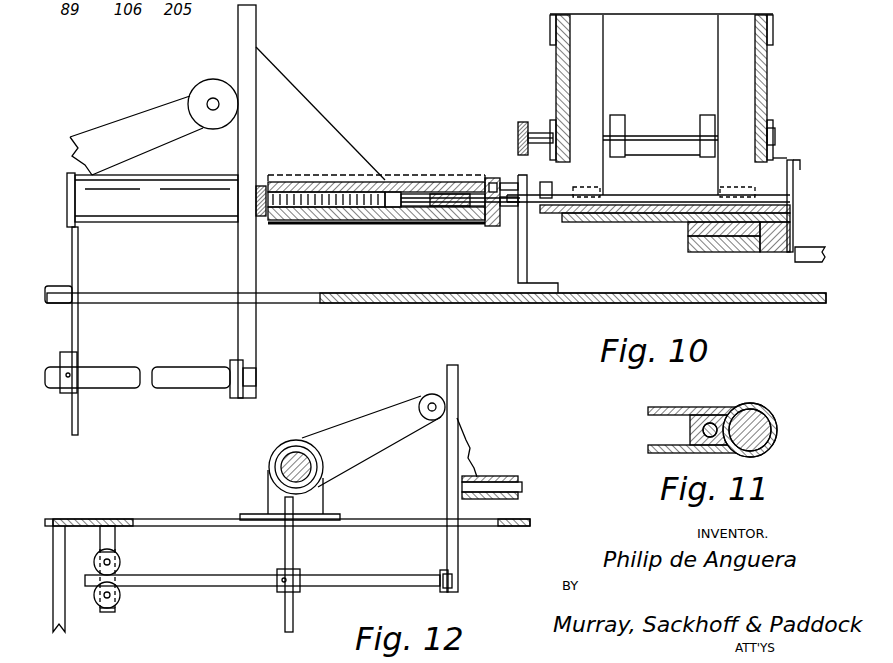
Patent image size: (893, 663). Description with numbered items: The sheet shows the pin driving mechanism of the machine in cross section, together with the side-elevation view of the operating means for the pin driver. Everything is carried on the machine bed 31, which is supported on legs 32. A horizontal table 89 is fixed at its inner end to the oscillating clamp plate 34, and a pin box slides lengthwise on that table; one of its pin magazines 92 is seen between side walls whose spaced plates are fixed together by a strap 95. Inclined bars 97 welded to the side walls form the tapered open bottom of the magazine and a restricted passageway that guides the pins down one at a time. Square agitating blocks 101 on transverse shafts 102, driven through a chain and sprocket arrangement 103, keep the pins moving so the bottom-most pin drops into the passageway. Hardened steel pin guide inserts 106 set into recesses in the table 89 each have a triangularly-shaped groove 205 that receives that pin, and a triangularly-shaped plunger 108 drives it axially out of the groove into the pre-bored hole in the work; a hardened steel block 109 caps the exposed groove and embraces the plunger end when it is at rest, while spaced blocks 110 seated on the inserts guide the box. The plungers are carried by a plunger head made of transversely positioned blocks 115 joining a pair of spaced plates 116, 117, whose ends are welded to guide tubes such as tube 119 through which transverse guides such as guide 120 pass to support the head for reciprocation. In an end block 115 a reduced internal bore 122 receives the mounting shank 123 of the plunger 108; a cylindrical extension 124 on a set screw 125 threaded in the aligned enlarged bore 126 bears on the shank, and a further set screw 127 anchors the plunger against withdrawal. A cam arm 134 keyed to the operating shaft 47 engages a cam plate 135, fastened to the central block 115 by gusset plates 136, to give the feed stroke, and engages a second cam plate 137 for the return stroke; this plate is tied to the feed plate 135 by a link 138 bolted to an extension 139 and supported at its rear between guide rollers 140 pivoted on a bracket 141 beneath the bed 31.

In FIG. 10, the machine bed 31 is at (786, 305).
In FIG. 12, the machine bed 31 is at (90, 519).
In FIG. 12, the legs 32 is at (63, 618).
In FIG. 10, the clamp plate 34 is at (794, 178).
In FIG. 12, the operating shaft 47 is at (295, 455).
In FIG. 10, the horizontal table 89 is at (646, 222).
In FIG. 10, the pin magazine 92 is at (556, 57).
In FIG. 10, the strap 95 is at (551, 32).
In FIG. 10, the inclined bar 97 is at (598, 40).
In FIG. 10, the agitating block 101 is at (619, 118).
In FIG. 10, the transverse shaft 102 is at (680, 135).
In FIG. 10, the chain and sprocket arrangement 103 is at (526, 111).
In FIG. 10, the pin guide insert 106 is at (790, 208).
In FIG. 10, the plunger 108 is at (637, 197).
In FIG. 10, the hardened steel block 109 is at (541, 184).
In FIG. 10, the guide block 110 is at (731, 186).
In FIG. 10, the block 115 is at (433, 182).
In FIG. 11, the block 115 is at (724, 410).
In FIG. 12, the block 115 is at (523, 488).
In FIG. 10, the plate 116 is at (293, 180).
In FIG. 11, the plate 116 is at (692, 407).
In FIG. 12, the plate 116 is at (504, 476).
In FIG. 10, the plate 117 is at (326, 222).
In FIG. 11, the plate 117 is at (655, 447).
In FIG. 12, the plate 117 is at (522, 497).
In FIG. 11, the guide tube 119 is at (775, 424).
In FIG. 10, the transverse guide 120 is at (152, 207).
In FIG. 10, the reduced internal bore 122 is at (418, 207).
In FIG. 10, the mounting shank 123 is at (492, 210).
In FIG. 10, the cylindrical extension 124 is at (402, 195).
In FIG. 10, the set screw 125 is at (358, 212).
In FIG. 10, the enlarged bore 126 is at (390, 190).
In FIG. 10, the set screw 127 is at (480, 181).
In FIG. 10, the cam arm 134 is at (132, 123).
In FIG. 12, the cam arm 134 is at (378, 423).
In FIG. 10, the cam plate 135 is at (252, 32).
In FIG. 12, the cam plate 135 is at (458, 386).
In FIG. 10, the gusset plate 136 is at (292, 86).
In FIG. 12, the gusset plate 136 is at (468, 441).
In FIG. 10, the cam plate 137 is at (82, 331).
In FIG. 12, the cam plate 137 is at (288, 563).
In FIG. 10, the link 138 is at (184, 373).
In FIG. 12, the link 138 is at (398, 576).
In FIG. 10, the extension 139 is at (237, 399).
In FIG. 12, the extension 139 is at (456, 580).
In FIG. 12, the guide rollers 140 is at (122, 570).
In FIG. 12, the bracket 141 is at (115, 527).
In FIG. 10, the triangularly-shaped groove 205 is at (793, 160).